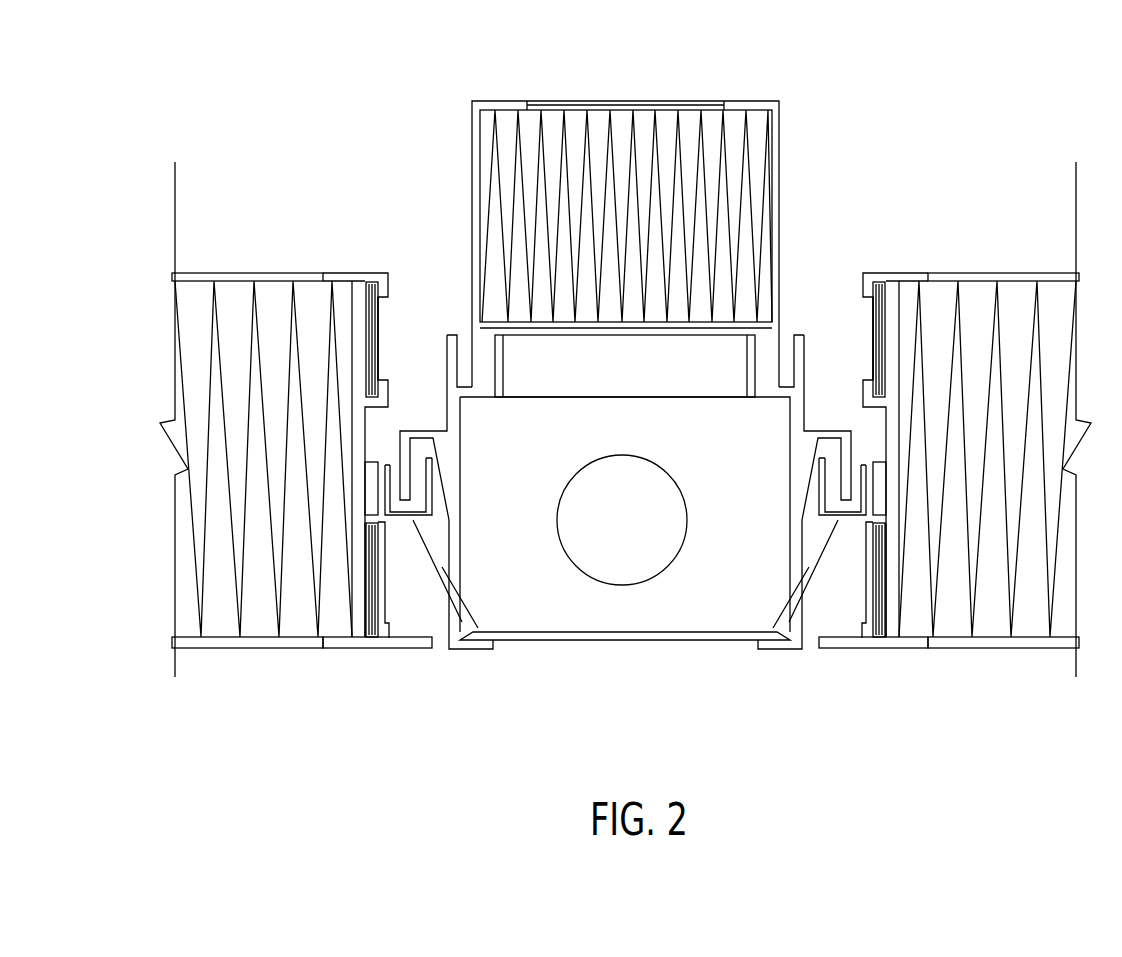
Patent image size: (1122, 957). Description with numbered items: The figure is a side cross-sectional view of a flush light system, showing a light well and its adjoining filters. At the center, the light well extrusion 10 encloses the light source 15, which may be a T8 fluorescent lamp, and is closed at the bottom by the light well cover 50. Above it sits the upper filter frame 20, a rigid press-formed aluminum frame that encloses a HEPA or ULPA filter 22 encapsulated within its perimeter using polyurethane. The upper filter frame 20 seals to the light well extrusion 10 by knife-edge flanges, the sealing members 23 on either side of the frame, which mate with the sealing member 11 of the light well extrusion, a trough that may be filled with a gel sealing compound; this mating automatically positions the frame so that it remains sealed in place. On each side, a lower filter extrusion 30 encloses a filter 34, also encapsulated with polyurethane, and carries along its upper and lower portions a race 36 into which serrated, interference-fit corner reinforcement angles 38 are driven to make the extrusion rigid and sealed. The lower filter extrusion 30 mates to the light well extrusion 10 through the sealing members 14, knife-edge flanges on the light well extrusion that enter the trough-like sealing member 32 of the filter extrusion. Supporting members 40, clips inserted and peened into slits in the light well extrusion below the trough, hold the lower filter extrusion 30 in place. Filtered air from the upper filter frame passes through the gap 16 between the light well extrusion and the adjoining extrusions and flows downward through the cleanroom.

The light well extrusion 10 is at (462, 505).
The sealing member 11 is at (485, 385).
The sealing member 14 is at (427, 428).
The light source 15 is at (609, 534).
The gap 16 is at (438, 654).
The upper filter frame 20 is at (468, 190).
The filter 22 is at (655, 135).
The sealing member 23 is at (463, 345).
The lower filter extrusion 30 is at (368, 272).
The sealing member 32 is at (398, 530).
The filter 34 is at (250, 305).
The race 36 is at (366, 346).
The corner reinforcement angles 38 is at (378, 336).
The supporting members 40 is at (443, 568).
The light well cover 50 is at (530, 641).